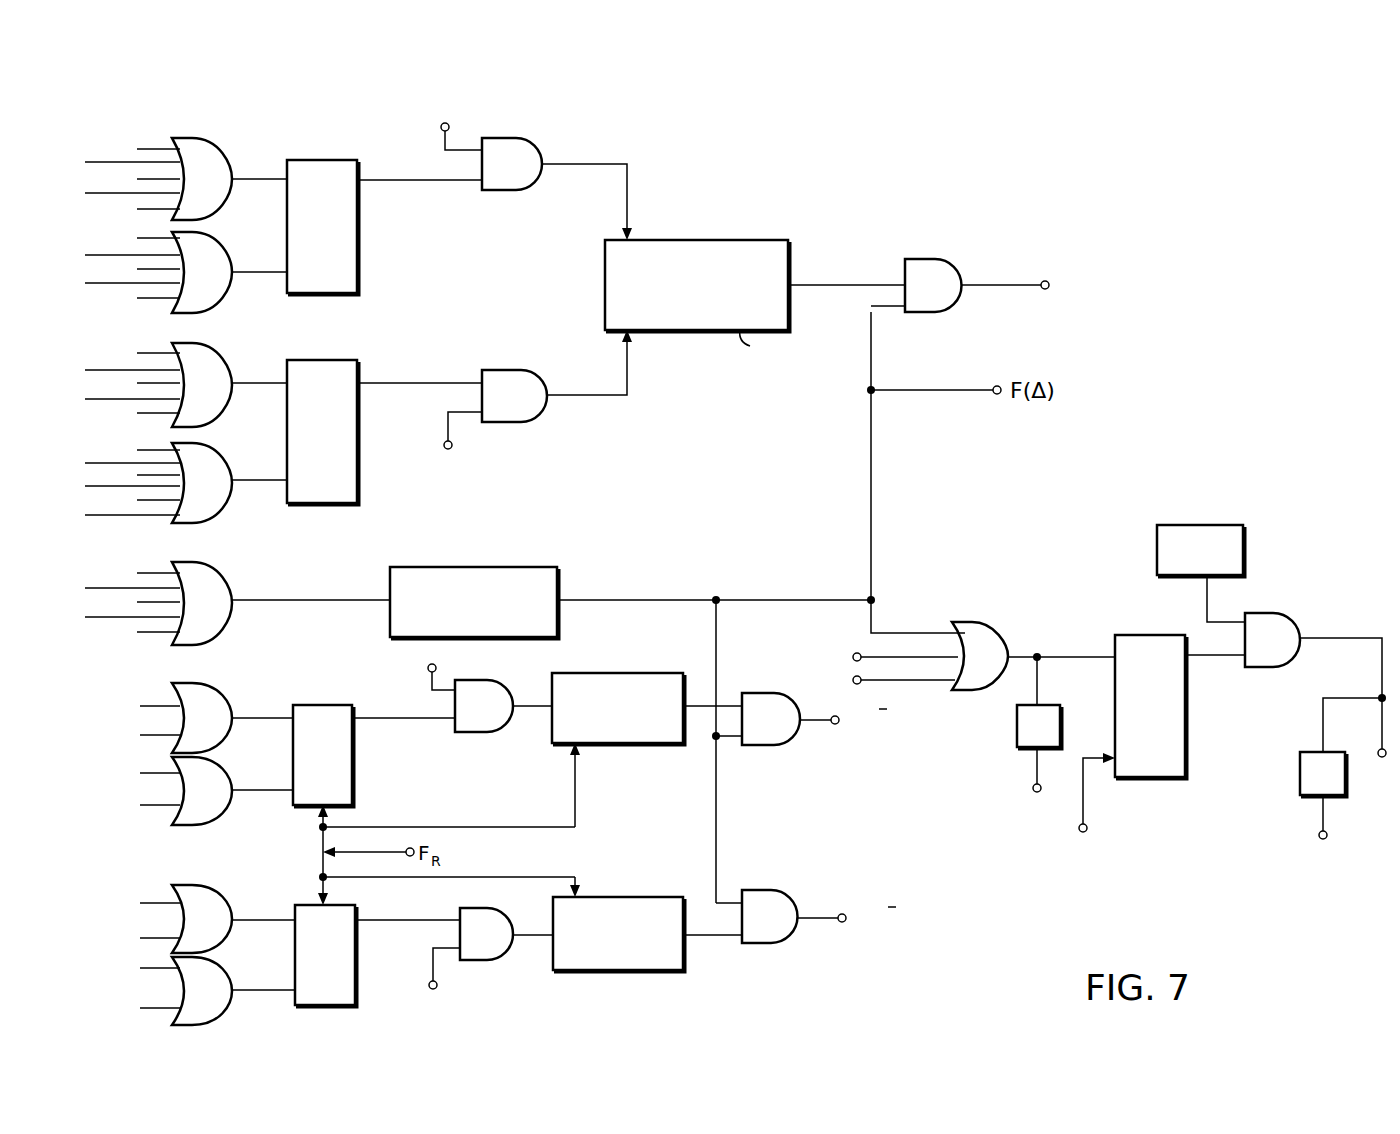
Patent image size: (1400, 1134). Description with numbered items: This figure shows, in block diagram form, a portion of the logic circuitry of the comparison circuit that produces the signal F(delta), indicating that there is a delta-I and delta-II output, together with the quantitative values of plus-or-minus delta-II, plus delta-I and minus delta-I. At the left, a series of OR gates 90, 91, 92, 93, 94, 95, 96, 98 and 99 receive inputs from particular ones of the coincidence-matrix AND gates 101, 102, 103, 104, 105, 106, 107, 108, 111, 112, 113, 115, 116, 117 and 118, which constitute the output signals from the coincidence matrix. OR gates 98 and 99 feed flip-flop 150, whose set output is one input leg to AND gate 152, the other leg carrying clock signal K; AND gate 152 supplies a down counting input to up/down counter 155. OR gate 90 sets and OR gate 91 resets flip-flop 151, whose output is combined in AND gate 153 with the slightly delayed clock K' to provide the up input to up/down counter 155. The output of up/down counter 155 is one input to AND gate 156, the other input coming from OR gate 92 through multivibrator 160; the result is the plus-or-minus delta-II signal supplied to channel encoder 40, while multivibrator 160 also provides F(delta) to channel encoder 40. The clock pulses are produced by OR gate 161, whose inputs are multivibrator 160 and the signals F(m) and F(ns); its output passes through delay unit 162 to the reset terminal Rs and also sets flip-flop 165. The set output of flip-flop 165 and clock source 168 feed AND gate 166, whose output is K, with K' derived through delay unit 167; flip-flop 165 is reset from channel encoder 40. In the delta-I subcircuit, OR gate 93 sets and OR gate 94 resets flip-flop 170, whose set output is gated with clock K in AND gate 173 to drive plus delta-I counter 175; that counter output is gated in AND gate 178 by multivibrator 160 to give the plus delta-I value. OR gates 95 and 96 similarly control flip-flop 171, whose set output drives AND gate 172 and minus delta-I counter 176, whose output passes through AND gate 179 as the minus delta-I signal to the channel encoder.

The OR gate 98 is at (208, 142).
The OR gate 99 is at (226, 252).
The OR gate 90 is at (224, 356).
The OR gate 91 is at (226, 455).
The OR gate 92 is at (224, 572).
The OR gate 93 is at (226, 692).
The OR gate 94 is at (228, 770).
The OR gate 95 is at (228, 896).
The OR gate 96 is at (230, 972).
The AND gate 101 is at (135, 571).
The AND gate 102 is at (135, 559).
The AND gate 103 is at (111, 654).
The AND gate 104 is at (111, 463).
The AND gate 105 is at (135, 475).
The AND gate 106 is at (111, 422).
The AND gate 107 is at (111, 273).
The AND gate 108 is at (135, 594).
The AND gate 111 is at (111, 544).
The AND gate 112 is at (111, 443).
The AND gate 113 is at (111, 586).
The AND gate 115 is at (111, 450).
The AND gate 116 is at (111, 472).
The AND gate 117 is at (111, 544).
The AND gate 118 is at (135, 298).
The flip-flop 150 is at (322, 160).
The flip-flop 151 is at (342, 360).
The AND gate 152 is at (530, 143).
The AND gate 153 is at (535, 418).
The up/down counter 155 is at (728, 240).
The AND gate 156 is at (926, 259).
The multivibrator 160 is at (493, 567).
The OR gate 161 is at (980, 624).
The delay unit 162 is at (1017, 730).
The flip-flop 165 is at (1185, 750).
The AND gate 166 is at (1282, 614).
The delay unit 167 is at (1300, 778).
The clock source 168 is at (1190, 525).
The flip-flop 170 is at (322, 705).
The flip-flop 171 is at (355, 988).
The AND gate 172 is at (480, 960).
The AND gate 173 is at (478, 732).
The +delta-I counter 175 is at (613, 673).
The −delta-I counter 176 is at (640, 897).
The AND gate 178 is at (768, 745).
The AND gate 179 is at (772, 890).
The channel encoder 40 is at (1076, 827).